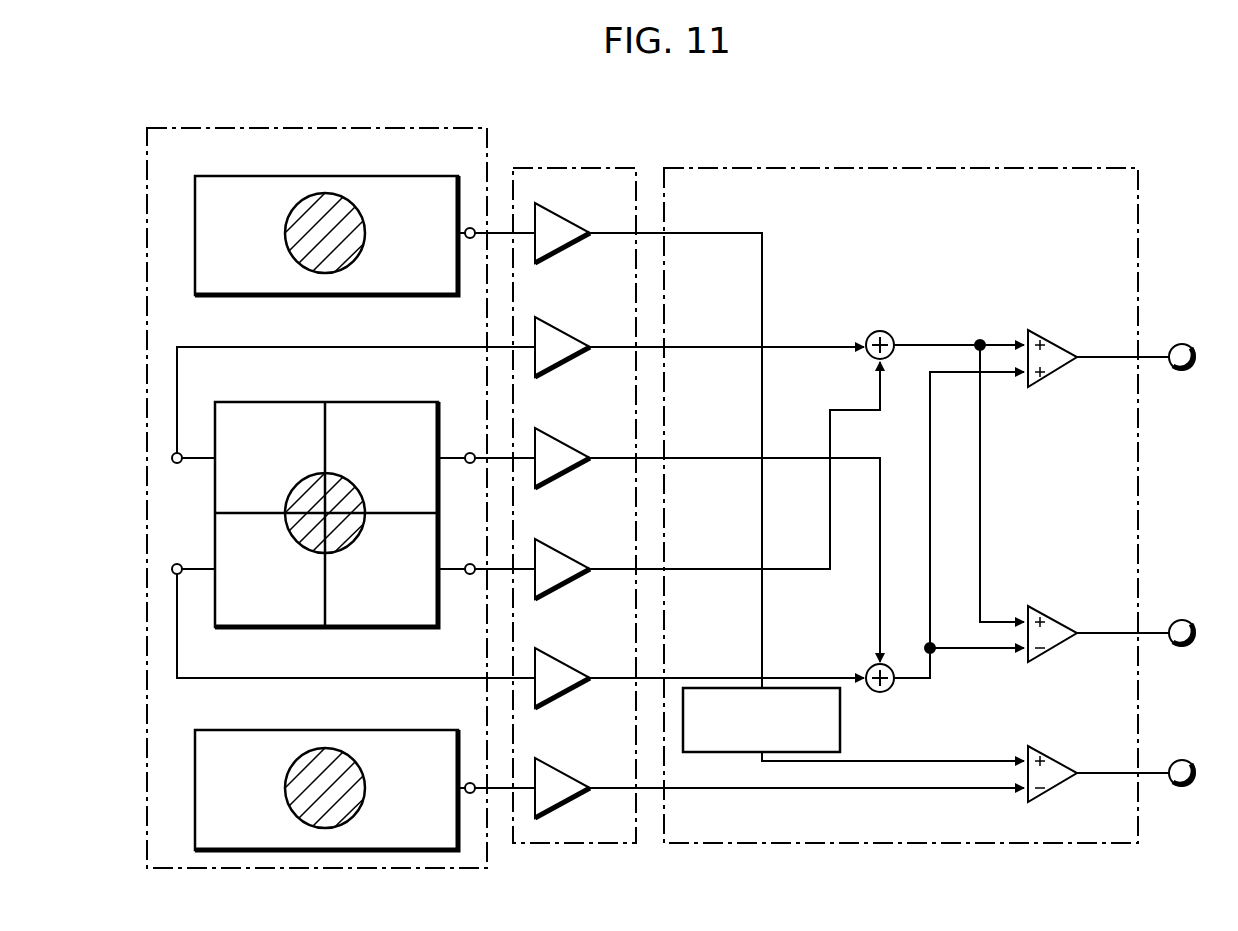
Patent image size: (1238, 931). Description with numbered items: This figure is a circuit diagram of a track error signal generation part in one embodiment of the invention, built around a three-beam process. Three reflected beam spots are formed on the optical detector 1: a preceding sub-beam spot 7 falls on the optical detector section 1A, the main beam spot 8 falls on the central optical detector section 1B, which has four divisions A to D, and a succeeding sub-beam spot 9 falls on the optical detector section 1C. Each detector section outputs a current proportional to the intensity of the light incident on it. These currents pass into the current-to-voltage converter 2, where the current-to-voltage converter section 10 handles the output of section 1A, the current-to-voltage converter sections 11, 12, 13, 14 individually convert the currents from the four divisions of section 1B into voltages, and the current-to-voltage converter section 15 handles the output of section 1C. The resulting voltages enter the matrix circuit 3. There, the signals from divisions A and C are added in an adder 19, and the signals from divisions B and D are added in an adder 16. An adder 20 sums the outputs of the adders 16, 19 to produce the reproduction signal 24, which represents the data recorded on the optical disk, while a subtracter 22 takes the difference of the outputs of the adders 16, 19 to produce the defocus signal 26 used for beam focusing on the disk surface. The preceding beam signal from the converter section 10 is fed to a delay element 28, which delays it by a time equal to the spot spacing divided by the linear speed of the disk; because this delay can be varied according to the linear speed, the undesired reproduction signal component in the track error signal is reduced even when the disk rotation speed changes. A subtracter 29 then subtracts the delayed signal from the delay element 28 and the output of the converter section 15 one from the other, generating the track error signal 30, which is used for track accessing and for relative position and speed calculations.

The optical detector 1 is at (250, 127).
The optical detector section 1A is at (300, 176).
The optical detector section 1B is at (300, 402).
The optical detector section 1C is at (300, 730).
The current-to-voltage converter 2 is at (553, 168).
The matrix circuit 3 is at (925, 168).
The preceding sub-beam spot 7 is at (348, 265).
The main beam spot 8 is at (340, 553).
The succeeding sub-beam spot 9 is at (343, 828).
The current-to-voltage converter section 10 is at (565, 220).
The current-to-voltage converter section 11 is at (565, 334).
The current-to-voltage converter section 12 is at (565, 445).
The current-to-voltage converter section 13 is at (565, 556).
The current-to-voltage converter section 14 is at (565, 665).
The current-to-voltage converter section 15 is at (565, 775).
The adder 16 is at (882, 330).
The adder 19 is at (870, 668).
The adder 20 is at (1057, 340).
The subtracter 22 is at (1055, 652).
The reproduction signal 24 is at (1186, 344).
The defocus signal 26 is at (1186, 620).
The delay element 28 is at (842, 720).
The subtracter 29 is at (1055, 758).
The track error signal 30 is at (1186, 760).